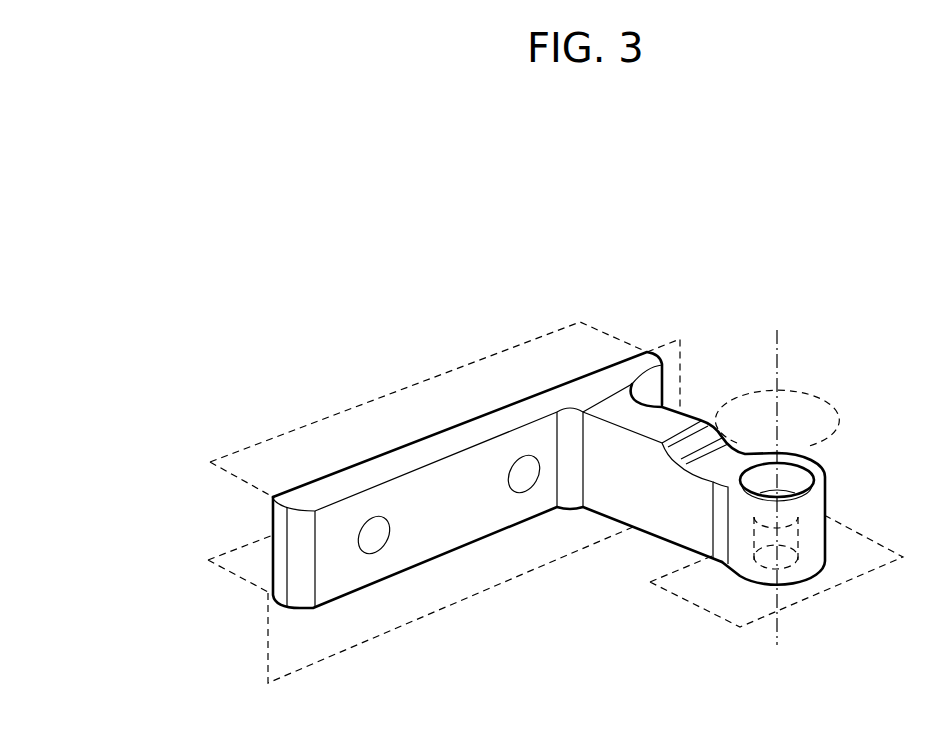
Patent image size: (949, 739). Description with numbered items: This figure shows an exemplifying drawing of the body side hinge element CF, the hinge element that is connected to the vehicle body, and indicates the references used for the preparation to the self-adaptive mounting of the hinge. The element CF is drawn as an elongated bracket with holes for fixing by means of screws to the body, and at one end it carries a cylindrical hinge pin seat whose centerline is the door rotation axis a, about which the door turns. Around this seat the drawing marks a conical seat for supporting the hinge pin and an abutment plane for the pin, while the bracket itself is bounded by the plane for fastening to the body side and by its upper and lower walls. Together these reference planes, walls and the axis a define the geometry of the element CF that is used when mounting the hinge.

The body side hinge element CF is at (414, 334).
The door rotation axis a is at (780, 368).